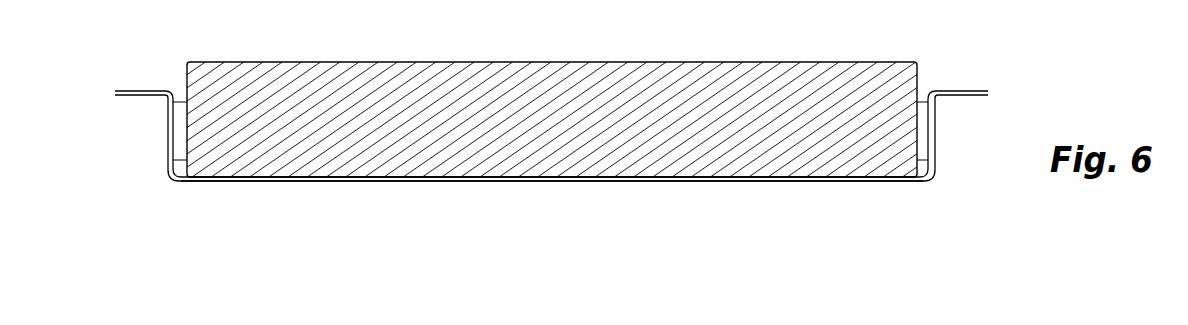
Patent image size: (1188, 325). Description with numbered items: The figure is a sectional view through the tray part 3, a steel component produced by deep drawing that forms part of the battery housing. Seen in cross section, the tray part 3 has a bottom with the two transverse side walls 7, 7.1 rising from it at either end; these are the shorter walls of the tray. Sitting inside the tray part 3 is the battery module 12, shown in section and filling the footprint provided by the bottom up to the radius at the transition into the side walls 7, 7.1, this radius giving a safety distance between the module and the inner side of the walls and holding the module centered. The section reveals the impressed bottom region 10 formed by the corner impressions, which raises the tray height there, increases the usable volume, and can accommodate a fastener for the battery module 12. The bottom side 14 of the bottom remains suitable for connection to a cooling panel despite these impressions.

The tray part 3 is at (957, 83).
The side wall 7 is at (166, 145).
The side wall 7.1 is at (937, 126).
The impressed bottom region 10 is at (228, 183).
The battery module 12 is at (426, 129).
The bottom side 14 is at (605, 181).